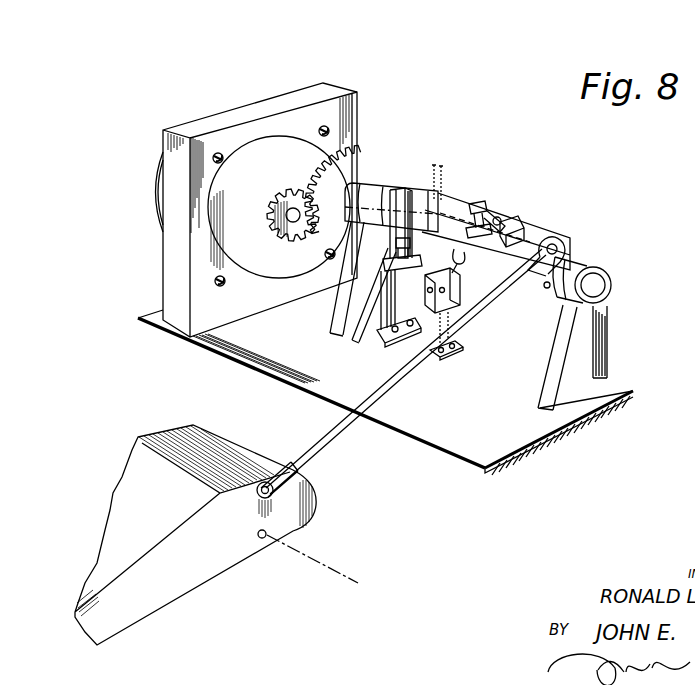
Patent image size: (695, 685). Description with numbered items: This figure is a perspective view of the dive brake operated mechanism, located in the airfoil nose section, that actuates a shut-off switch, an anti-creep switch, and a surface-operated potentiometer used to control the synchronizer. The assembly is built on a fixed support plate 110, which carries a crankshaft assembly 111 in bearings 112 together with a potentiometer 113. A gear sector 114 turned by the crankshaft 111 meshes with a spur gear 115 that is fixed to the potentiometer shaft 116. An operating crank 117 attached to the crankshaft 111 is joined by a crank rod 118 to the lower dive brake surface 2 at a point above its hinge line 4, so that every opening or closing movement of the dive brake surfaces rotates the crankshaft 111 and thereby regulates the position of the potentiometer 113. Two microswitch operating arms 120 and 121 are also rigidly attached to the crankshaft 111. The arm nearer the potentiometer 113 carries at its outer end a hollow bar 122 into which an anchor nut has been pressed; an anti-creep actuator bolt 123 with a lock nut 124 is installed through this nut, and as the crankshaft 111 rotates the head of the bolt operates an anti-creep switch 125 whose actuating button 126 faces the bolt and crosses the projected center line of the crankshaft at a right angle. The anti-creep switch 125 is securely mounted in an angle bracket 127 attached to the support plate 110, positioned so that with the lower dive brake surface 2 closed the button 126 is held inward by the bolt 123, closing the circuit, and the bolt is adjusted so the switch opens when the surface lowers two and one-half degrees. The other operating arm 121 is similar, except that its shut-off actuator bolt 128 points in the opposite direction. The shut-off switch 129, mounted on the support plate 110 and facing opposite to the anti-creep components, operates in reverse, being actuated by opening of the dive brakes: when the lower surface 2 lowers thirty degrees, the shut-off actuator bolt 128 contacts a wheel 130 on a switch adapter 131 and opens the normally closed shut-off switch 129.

The lower dive brake surface 2 is at (195, 535).
The hinge line 4 is at (337, 570).
The fixed support plate 110 is at (385, 392).
The crankshaft assembly 111 is at (535, 240).
The bearings 112 is at (398, 182).
The potentiometer 113 is at (257, 210).
The gear sector 114 is at (352, 150).
The spur gear 115 is at (287, 240).
The potentiometer shaft 116 is at (290, 228).
The operating crank 117 is at (572, 255).
The crank rod 118 is at (472, 322).
The microswitch operating arm 120 is at (383, 333).
The microswitch operating arm 121 is at (505, 225).
The hollow bar 122 is at (372, 343).
The anti-creep actuator bolt 123 is at (333, 311).
The lock nut 124 is at (340, 330).
The anti-creep switch 125 is at (445, 198).
The actuating button 126 is at (430, 217).
The angle bracket 127 is at (396, 366).
The shut-off actuator bolt 128 is at (497, 217).
The shut-off switch 129 is at (482, 308).
The wheel 130 is at (470, 250).
The switch adapter 131 is at (455, 265).